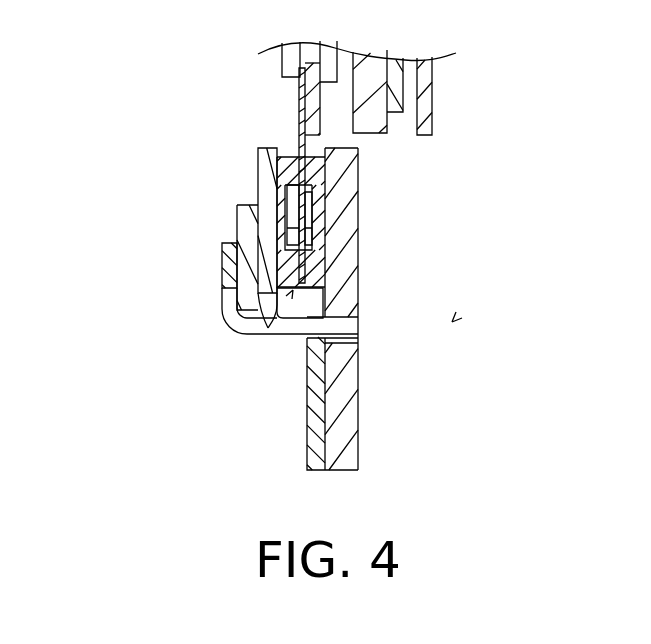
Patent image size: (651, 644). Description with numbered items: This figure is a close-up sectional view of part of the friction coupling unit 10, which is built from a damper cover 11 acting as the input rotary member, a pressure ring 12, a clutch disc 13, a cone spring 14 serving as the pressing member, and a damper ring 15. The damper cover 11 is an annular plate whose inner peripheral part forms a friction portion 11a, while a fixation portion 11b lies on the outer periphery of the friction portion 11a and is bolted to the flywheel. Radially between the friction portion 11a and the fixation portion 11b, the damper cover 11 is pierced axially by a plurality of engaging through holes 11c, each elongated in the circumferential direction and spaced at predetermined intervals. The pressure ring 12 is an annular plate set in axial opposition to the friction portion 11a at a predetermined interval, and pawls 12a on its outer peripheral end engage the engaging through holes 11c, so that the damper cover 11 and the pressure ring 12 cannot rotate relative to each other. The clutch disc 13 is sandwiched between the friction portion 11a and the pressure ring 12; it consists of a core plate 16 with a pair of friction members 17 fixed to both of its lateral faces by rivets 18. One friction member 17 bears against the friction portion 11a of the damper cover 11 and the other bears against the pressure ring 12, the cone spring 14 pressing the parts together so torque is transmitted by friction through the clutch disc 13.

The friction coupling unit 10 is at (452, 322).
The damper cover 11 is at (402, 309).
The friction portion 11a is at (348, 172).
The fixation portion 11b is at (363, 388).
The engaging through holes 11c is at (357, 330).
The pressure ring 12 is at (226, 274).
The pawls 12a is at (317, 328).
The clutch disc 13 is at (293, 290).
The cone spring 14 is at (245, 231).
The damper ring 15 is at (227, 270).
The core plate 16 is at (300, 105).
The friction members 17 is at (278, 197).
The rivets 18 is at (281, 221).